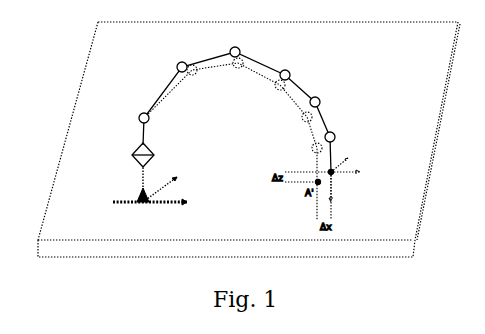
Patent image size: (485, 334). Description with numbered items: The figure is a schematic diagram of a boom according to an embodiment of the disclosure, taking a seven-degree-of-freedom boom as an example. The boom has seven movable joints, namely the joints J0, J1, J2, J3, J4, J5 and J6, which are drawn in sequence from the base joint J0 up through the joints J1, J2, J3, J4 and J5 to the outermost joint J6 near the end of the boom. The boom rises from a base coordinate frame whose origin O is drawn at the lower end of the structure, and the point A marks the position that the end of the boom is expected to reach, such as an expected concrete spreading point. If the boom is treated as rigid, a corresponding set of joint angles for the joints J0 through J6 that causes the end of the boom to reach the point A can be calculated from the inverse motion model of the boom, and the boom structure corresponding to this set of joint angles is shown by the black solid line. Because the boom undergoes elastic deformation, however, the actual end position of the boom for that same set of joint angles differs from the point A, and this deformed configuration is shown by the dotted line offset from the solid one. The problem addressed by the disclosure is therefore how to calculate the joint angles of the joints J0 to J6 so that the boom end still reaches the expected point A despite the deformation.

The movable joint J0 is at (130, 155).
The movable joint J1 is at (137, 107).
The movable joint J2 is at (178, 59).
The movable joint J3 is at (235, 43).
The movable joint J4 is at (290, 67).
The movable joint J5 is at (323, 95).
The movable joint J6 is at (338, 134).
The expected end position A is at (349, 175).
The base coordinate frame origin O is at (150, 192).